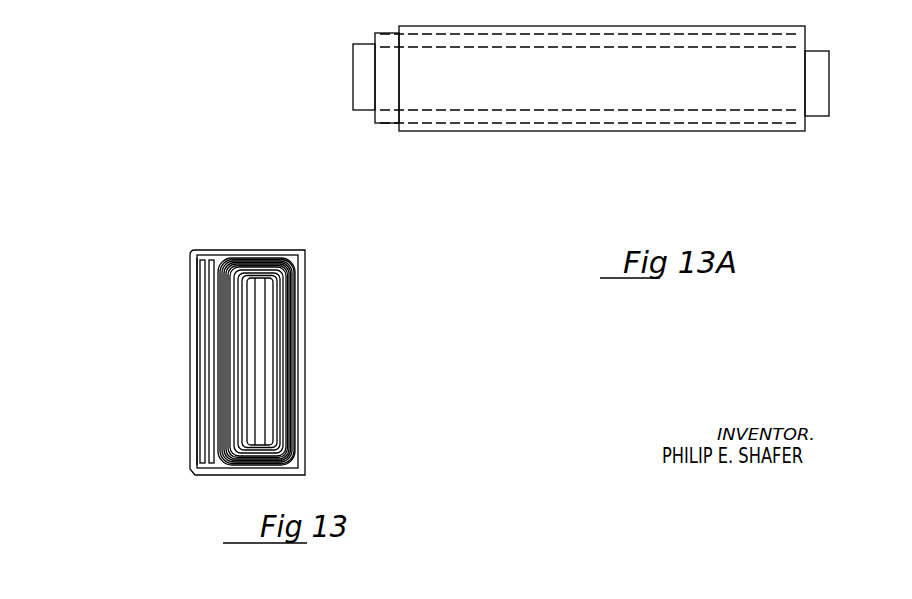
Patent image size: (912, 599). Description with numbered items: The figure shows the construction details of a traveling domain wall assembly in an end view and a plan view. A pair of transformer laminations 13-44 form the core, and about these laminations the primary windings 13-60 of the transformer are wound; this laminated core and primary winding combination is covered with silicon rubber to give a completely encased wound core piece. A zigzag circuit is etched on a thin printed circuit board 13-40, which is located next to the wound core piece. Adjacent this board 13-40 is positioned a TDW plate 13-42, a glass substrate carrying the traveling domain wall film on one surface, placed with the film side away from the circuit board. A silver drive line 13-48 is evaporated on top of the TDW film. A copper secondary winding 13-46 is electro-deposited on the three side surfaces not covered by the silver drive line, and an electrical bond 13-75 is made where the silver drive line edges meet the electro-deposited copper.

In FIG. 13A, the transformer laminations 13-44 is at (360, 57).
In FIG. 13, the transformer laminations 13-44 is at (245, 298).
In FIG. 13A, the thin printed circuit board 13-40 is at (387, 85).
In FIG. 13, the thin printed circuit board 13-40 is at (212, 385).
In FIG. 13A, the copper secondary winding 13-46 is at (548, 118).
In FIG. 13, the copper secondary winding 13-46 is at (300, 378).
In FIG. 13, the primary windings 13-60 is at (243, 260).
In FIG. 13, the electrical bond 13-75 is at (192, 250).
In FIG. 13, the silver 13-48 is at (194, 277).
In FIG. 13, the TDW plate 13-42 is at (202, 332).